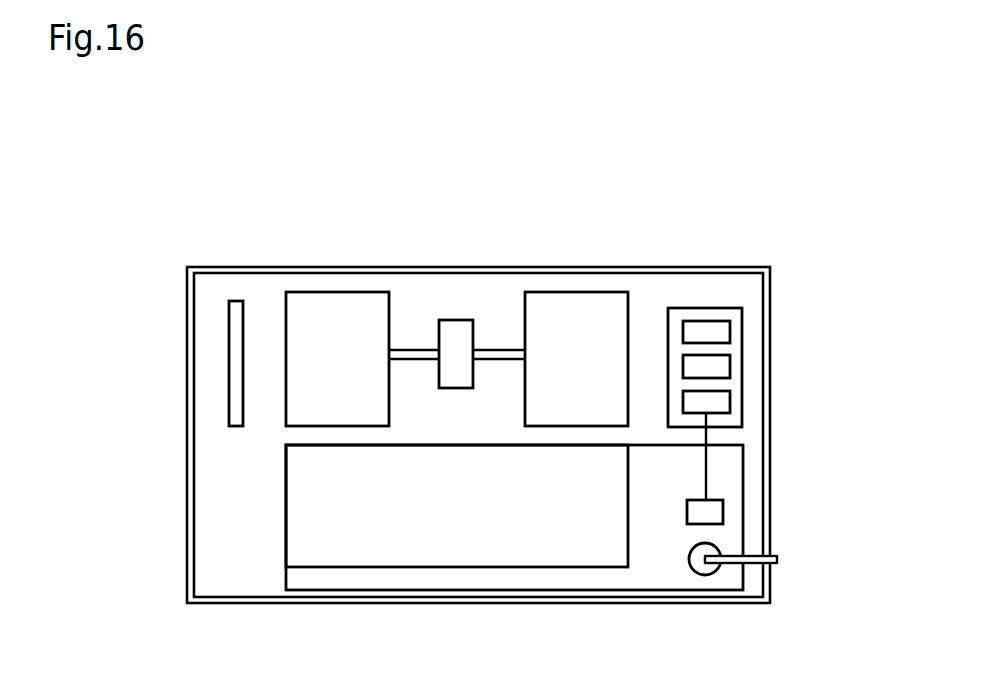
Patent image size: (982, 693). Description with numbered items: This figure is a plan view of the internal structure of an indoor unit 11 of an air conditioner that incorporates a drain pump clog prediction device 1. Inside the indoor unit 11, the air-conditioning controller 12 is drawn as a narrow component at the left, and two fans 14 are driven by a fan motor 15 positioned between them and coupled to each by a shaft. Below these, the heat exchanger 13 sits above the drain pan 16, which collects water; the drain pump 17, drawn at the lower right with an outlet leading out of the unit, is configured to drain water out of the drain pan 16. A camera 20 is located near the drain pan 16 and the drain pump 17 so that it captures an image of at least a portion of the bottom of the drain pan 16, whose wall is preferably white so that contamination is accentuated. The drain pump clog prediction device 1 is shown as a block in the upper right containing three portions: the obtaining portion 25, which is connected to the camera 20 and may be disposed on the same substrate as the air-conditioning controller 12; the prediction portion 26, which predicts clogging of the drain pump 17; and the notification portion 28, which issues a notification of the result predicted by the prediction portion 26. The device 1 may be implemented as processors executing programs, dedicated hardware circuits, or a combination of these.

The drain pump clog prediction device 1 is at (744, 292).
The indoor unit 11 is at (704, 215).
The air-conditioning controller 12 is at (238, 301).
The heat exchanger 13 is at (450, 577).
The fan 14 is at (339, 292).
The fan motor 15 is at (457, 320).
The drain pan 16 is at (654, 570).
The drain pump 17 is at (706, 575).
The camera 20 is at (687, 510).
The obtaining portion 25 is at (731, 403).
The prediction portion 26 is at (731, 368).
The notification portion 28 is at (731, 332).